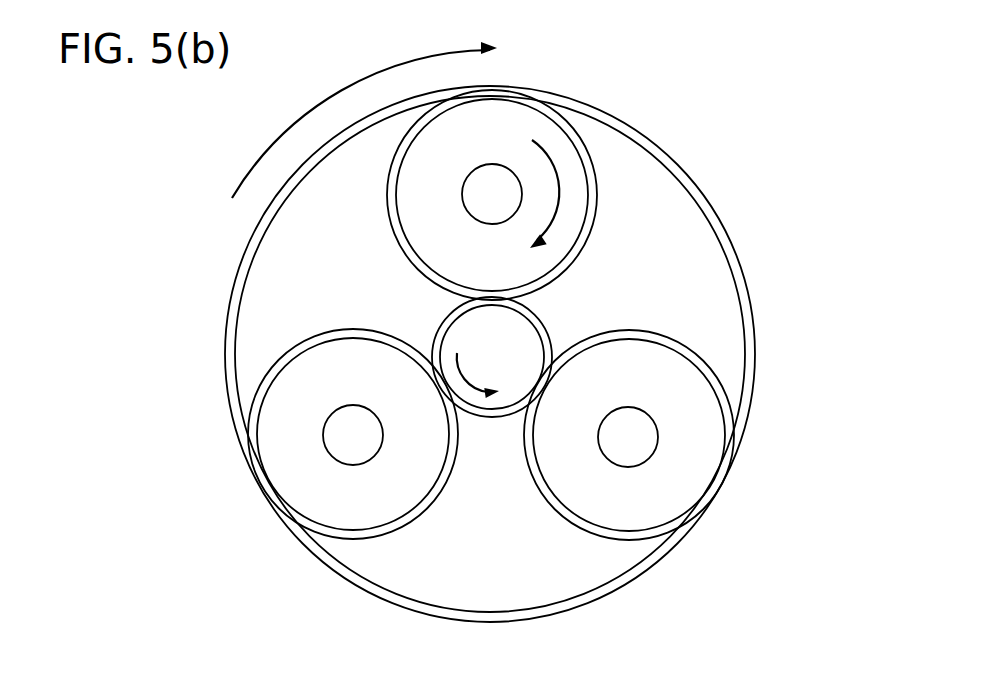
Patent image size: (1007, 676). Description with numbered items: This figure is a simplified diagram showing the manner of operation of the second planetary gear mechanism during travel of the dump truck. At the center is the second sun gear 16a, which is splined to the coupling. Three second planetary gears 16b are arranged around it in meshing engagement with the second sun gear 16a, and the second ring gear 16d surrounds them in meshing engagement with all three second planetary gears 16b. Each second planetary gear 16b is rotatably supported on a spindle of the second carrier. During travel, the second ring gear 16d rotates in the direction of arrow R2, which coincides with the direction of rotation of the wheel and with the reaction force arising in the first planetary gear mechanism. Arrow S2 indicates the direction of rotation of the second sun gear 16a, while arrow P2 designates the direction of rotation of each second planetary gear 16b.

The second ring gear 16d is at (610, 113).
The second planetary gears 16b is at (597, 183).
The second sun gear 16a is at (550, 323).
The direction of rotation of the second ring gear R2 is at (343, 120).
The direction of rotation of each second planetary gear P2 is at (524, 186).
The direction of rotation of the second sun gear S2 is at (478, 367).